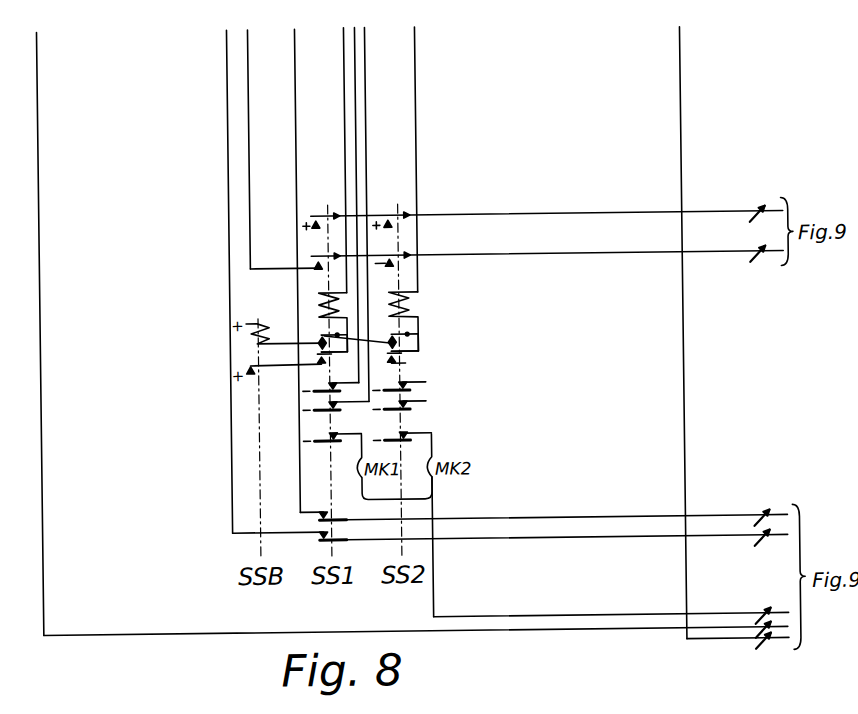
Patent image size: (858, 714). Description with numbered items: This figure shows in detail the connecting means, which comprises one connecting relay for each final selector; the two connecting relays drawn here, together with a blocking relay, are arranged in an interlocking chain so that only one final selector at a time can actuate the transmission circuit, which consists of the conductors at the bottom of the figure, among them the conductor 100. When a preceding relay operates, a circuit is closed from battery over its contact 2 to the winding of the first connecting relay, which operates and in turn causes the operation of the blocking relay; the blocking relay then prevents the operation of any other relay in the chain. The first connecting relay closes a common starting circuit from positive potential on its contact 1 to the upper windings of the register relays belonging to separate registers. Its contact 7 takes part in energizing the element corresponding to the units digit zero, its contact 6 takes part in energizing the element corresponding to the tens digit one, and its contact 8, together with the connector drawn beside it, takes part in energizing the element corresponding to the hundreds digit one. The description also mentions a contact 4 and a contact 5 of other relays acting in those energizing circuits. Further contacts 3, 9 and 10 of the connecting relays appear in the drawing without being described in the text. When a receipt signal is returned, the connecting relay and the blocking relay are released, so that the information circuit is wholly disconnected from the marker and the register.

The contact 1 of relay SS1 1 is at (543, 215).
The contact 2 is at (516, 256).
The contact 3 of selector switch relay 3 is at (364, 337).
The contact 4 is at (369, 344).
The contact 5 is at (355, 356).
The contact 6 of relay SS1 6 is at (364, 383).
The contact 7 of relay SS1 7 is at (364, 401).
The contact 8 of relay SS1 8 is at (367, 432).
The contact 9 (output line to Fig. 9) 9 is at (543, 510).
The contact 10 (output line to Fig. 9) 10 is at (510, 530).
The common line 100 to Fig. 9 100 is at (610, 605).